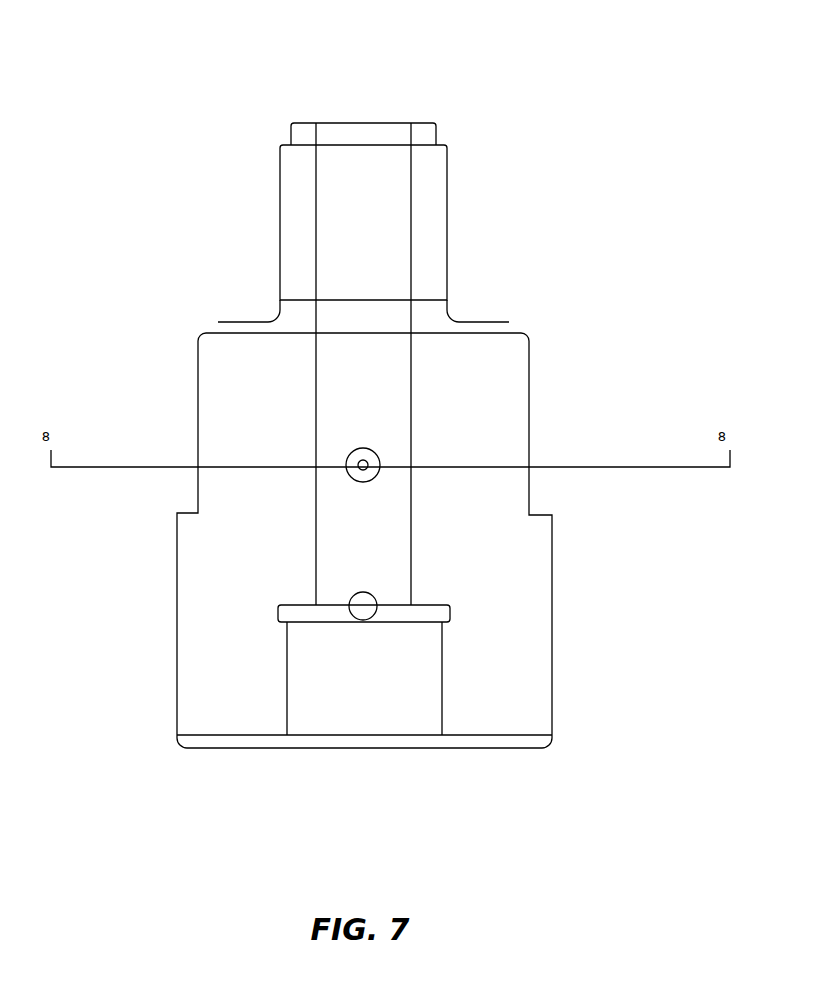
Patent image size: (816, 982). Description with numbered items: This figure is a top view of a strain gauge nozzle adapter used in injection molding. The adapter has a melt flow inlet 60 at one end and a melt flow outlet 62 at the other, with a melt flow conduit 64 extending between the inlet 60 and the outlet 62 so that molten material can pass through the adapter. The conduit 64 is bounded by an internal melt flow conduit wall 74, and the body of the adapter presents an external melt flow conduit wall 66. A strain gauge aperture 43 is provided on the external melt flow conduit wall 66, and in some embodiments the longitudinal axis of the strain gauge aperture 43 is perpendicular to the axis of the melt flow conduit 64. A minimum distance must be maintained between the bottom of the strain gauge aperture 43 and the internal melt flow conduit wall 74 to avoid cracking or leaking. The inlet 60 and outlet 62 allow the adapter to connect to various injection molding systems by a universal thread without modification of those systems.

The melt flow inlet 60 is at (352, 123).
The melt flow conduit 64 is at (362, 233).
The internal melt flow conduit wall 74 is at (315, 383).
The external melt flow conduit wall 66 is at (452, 522).
The strain gauge aperture 43 is at (375, 469).
The melt flow outlet 62 is at (377, 748).